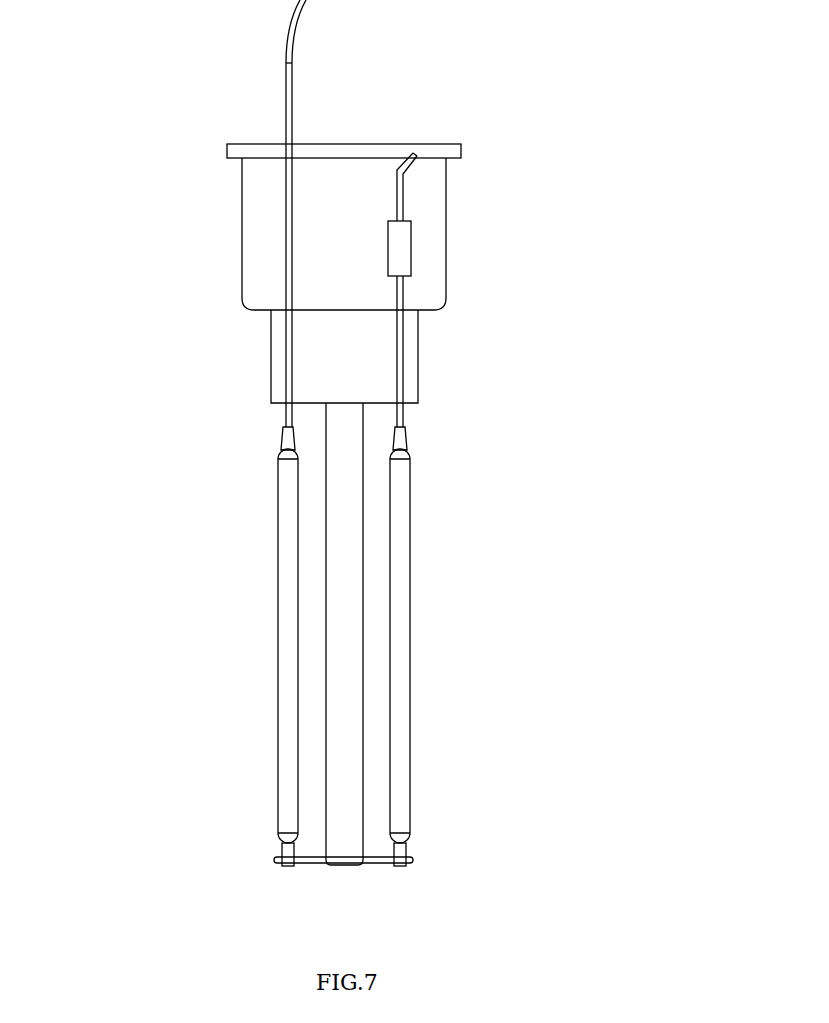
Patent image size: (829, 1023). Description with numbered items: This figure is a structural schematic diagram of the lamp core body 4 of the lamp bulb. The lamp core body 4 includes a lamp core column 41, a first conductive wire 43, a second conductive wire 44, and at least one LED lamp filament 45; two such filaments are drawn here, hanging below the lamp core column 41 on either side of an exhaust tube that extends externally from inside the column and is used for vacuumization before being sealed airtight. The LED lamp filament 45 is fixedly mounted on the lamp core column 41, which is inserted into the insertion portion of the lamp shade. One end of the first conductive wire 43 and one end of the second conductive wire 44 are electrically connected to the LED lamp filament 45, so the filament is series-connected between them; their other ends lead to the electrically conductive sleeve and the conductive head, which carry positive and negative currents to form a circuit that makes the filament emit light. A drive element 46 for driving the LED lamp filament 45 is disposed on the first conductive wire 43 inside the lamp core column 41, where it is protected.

The lamp core body 4 is at (184, 270).
The lamp core column 41 is at (437, 258).
The first conductive wire 43 is at (402, 197).
The second conductive wire 44 is at (287, 83).
The LED lamp filament 45 is at (290, 601).
The drive element 46 is at (398, 246).